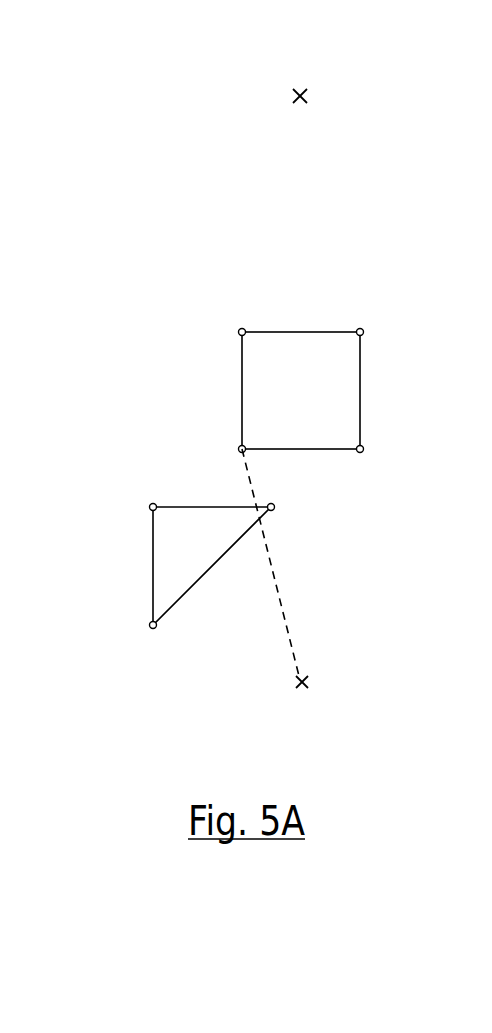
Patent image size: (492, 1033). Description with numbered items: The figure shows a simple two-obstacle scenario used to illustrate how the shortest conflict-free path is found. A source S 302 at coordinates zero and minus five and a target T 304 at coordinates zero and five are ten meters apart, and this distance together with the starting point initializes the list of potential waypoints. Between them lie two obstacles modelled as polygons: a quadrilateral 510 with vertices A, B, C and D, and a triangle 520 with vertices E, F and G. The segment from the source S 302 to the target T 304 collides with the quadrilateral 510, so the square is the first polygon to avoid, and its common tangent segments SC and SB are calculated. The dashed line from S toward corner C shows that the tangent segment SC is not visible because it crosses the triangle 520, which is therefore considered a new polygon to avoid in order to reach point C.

The source S 302 is at (351, 676).
The target T 304 is at (355, 116).
The quadrilateral obstacle 510 is at (296, 376).
The triangle obstacle 520 is at (238, 567).